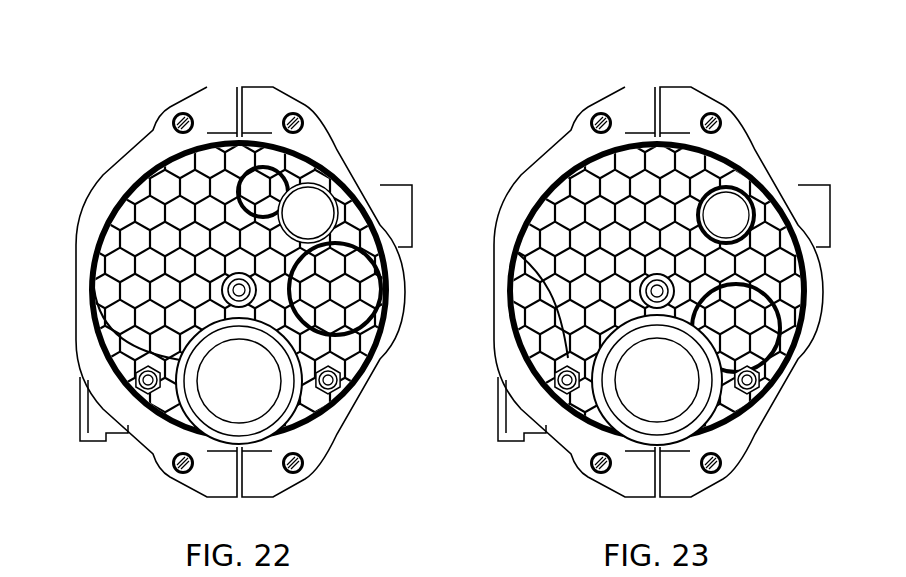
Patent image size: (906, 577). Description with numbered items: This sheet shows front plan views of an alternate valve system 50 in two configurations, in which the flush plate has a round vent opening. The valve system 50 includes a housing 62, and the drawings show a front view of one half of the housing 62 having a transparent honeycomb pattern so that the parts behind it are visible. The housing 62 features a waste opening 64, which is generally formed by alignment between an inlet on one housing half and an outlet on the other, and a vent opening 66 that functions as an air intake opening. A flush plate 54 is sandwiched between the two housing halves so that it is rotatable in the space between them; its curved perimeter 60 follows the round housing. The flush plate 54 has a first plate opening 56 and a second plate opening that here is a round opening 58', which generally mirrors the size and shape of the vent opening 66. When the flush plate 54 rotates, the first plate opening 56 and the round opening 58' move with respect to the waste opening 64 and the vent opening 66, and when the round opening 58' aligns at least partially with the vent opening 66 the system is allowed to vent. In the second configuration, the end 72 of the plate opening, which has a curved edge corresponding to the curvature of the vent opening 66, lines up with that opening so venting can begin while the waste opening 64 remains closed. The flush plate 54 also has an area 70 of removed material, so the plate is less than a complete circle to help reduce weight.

In FIG. 22, the valve system 50 is at (238, 269).
In FIG. 22, the flush plate 54 is at (92, 355).
In FIG. 23, the flush plate 54 is at (533, 310).
In FIG. 22, the first plate opening 56 is at (400, 250).
In FIG. 22, the round opening 58' is at (232, 121).
In FIG. 23, the round opening 58' is at (736, 160).
In FIG. 22, the curved perimeter 60 is at (140, 185).
In FIG. 22, the housing 62 is at (333, 443).
In FIG. 22, the waste opening 64 is at (262, 447).
In FIG. 23, the waste opening 64 is at (742, 420).
In FIG. 22, the vent opening 66 is at (320, 212).
In FIG. 23, the vent opening 66 is at (752, 200).
In FIG. 22, the area of removed material 70 is at (96, 428).
In FIG. 23, the end of the elongated vent opening 72 is at (768, 205).